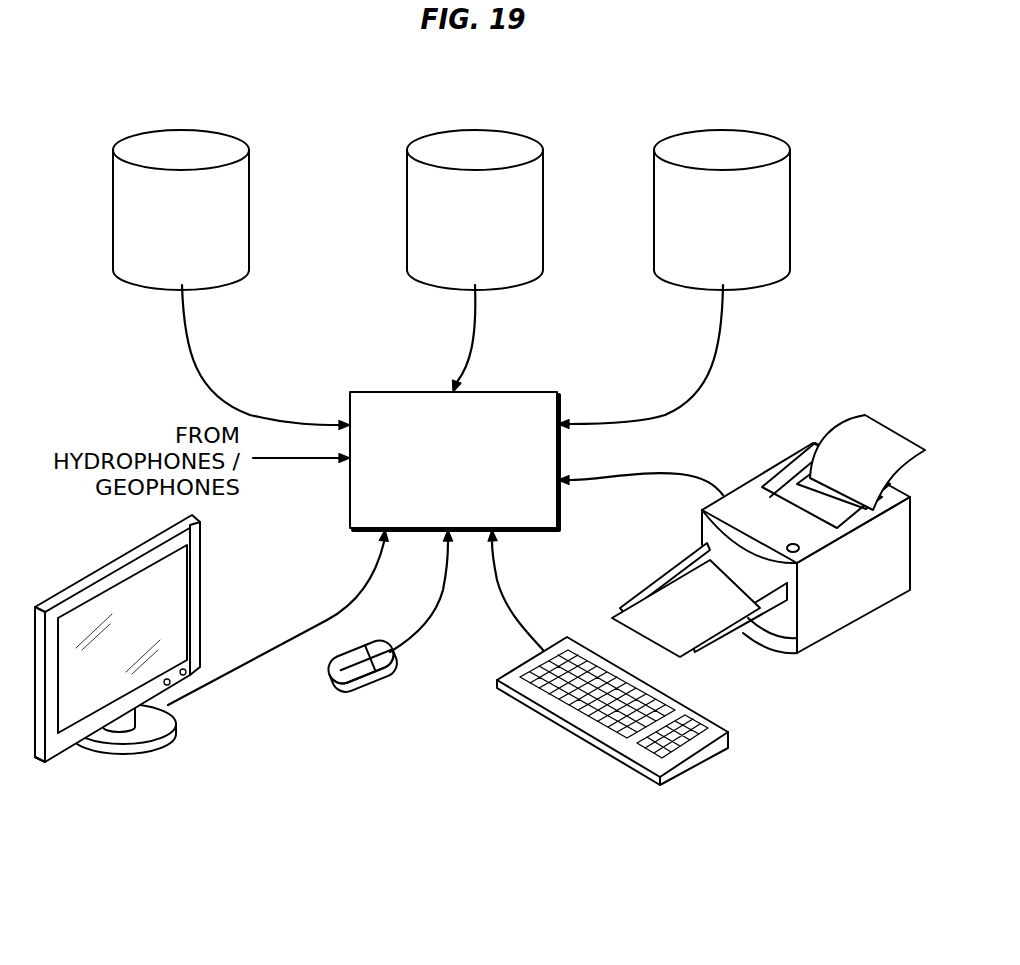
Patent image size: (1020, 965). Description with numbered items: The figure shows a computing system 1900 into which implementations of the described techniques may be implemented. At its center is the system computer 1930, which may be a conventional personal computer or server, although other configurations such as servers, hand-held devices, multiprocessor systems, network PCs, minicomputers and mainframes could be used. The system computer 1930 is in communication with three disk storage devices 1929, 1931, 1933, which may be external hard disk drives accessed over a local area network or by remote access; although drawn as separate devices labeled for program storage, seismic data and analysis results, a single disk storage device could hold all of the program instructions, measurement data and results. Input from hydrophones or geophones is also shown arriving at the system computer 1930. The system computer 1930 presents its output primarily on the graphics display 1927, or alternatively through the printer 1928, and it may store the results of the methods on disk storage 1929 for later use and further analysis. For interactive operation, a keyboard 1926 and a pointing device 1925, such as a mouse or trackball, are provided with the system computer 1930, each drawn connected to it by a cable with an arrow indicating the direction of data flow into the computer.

The computing system 1900 is at (190, 62).
The pointing device 1925 is at (367, 680).
The keyboard 1926 is at (583, 733).
The graphics display 1927 is at (200, 592).
The printer 1928 is at (887, 590).
The disk storage device 1929 is at (753, 147).
The system computer 1930 is at (520, 390).
The disk storage device 1931 is at (508, 147).
The disk storage device 1933 is at (215, 147).